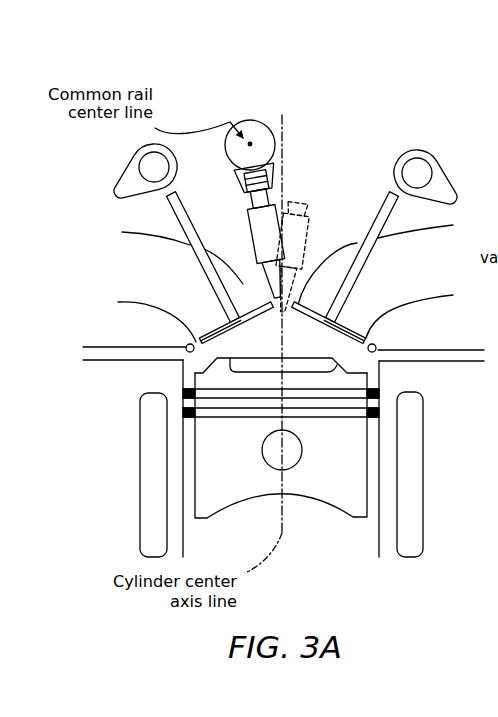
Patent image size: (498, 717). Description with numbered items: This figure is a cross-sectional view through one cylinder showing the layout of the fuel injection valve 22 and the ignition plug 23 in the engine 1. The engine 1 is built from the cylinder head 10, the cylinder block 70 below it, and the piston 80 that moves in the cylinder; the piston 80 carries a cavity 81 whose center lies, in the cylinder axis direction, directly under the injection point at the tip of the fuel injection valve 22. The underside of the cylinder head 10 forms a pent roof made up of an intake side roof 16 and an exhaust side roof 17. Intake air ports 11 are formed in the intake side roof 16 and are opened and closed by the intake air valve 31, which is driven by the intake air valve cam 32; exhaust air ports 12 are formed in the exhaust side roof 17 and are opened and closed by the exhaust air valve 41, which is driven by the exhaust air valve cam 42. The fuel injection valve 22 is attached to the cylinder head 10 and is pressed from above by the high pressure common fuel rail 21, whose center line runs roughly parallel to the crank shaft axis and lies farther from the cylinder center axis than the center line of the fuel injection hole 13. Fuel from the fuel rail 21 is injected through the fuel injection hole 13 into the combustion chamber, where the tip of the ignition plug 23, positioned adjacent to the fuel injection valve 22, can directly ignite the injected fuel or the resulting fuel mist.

The engine 1 is at (393, 92).
The cylinder head 10 is at (118, 327).
The intake air ports 11 is at (402, 298).
The exhaust air ports 12 is at (152, 272).
The fuel injection hole 13 is at (263, 286).
The intake side roof 16 is at (377, 346).
The exhaust side roof 17 is at (184, 343).
The fuel rail 21 is at (250, 128).
The fuel injection valve 22 is at (256, 238).
The ignition plug 23 is at (305, 250).
The intake air valve 31 is at (385, 204).
The intake air valve cam 32 is at (442, 183).
The exhaust air valve 41 is at (181, 203).
The exhaust air valve cam 42 is at (128, 182).
The cylinder block 70 is at (113, 405).
The piston 80 is at (337, 500).
The cavity 81 is at (298, 358).